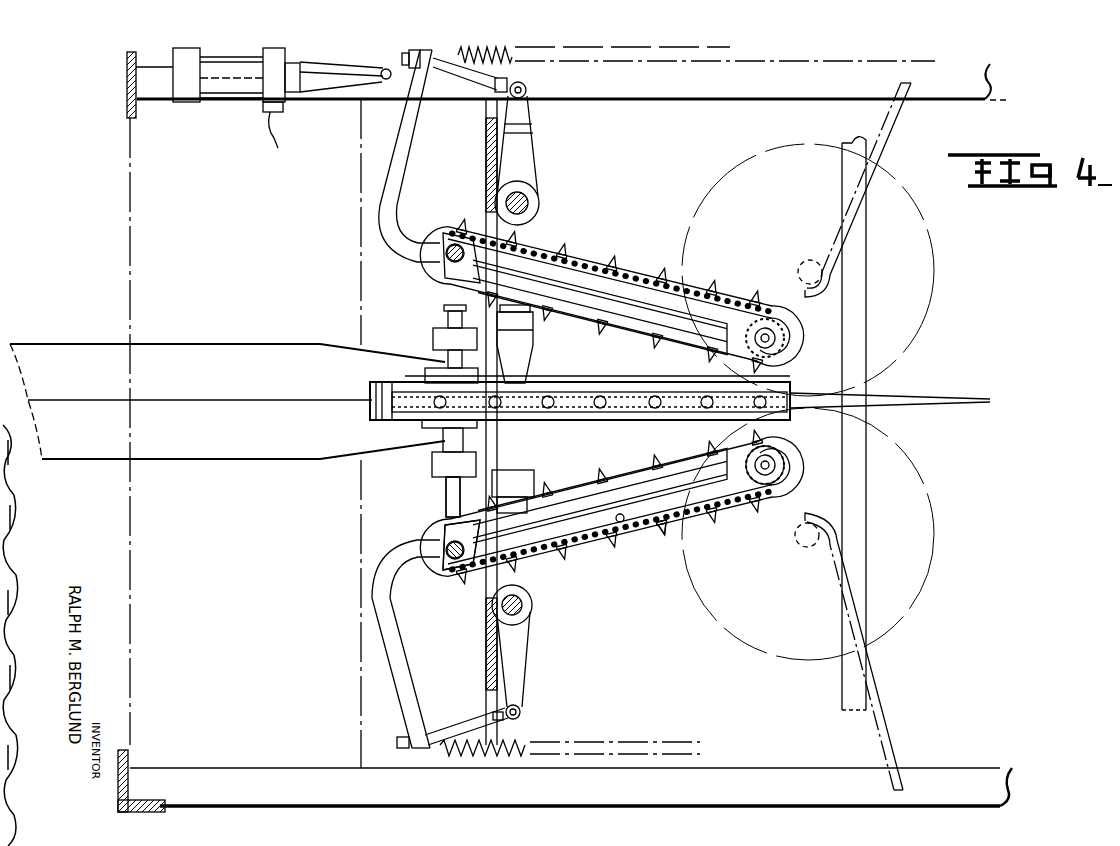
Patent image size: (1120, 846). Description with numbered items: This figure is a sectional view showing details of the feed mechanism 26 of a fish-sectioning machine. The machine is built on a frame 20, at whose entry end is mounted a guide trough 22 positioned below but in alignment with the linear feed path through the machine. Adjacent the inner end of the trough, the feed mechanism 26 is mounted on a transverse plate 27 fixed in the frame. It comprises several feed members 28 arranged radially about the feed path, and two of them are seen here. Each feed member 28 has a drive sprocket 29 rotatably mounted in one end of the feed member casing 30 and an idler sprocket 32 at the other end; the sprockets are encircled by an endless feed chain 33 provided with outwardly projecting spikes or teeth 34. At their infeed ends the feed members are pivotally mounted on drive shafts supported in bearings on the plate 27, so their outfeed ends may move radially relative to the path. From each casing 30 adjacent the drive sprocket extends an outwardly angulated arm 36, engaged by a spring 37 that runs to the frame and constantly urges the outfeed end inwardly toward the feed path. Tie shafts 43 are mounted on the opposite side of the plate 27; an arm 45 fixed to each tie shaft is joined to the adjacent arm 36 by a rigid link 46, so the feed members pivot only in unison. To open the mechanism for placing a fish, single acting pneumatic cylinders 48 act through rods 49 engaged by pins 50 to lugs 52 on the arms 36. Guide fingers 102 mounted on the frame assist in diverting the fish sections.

The frame 20 is at (703, 770).
The guide trough 22 is at (230, 345).
The feed mechanism 26 is at (575, 592).
The transverse plate 27 is at (484, 182).
The feed member 28 is at (598, 258).
The drive sprocket 29 is at (472, 585).
The feed member casing 30 is at (588, 520).
The idler sprocket 32 is at (750, 490).
The endless feed chain 33 is at (655, 530).
The spikes or teeth 34 is at (622, 524).
The angulated arm 36 is at (400, 680).
The spring 37 is at (525, 744).
The tie shaft 43 is at (530, 203).
The arm 45 is at (523, 158).
The rigid link 46 is at (458, 730).
The pneumatic cylinder 48 is at (238, 88).
The cylinder rod 49 is at (332, 68).
The pin 50 is at (375, 87).
The lug 52 is at (398, 86).
The guide finger 102 is at (885, 143).